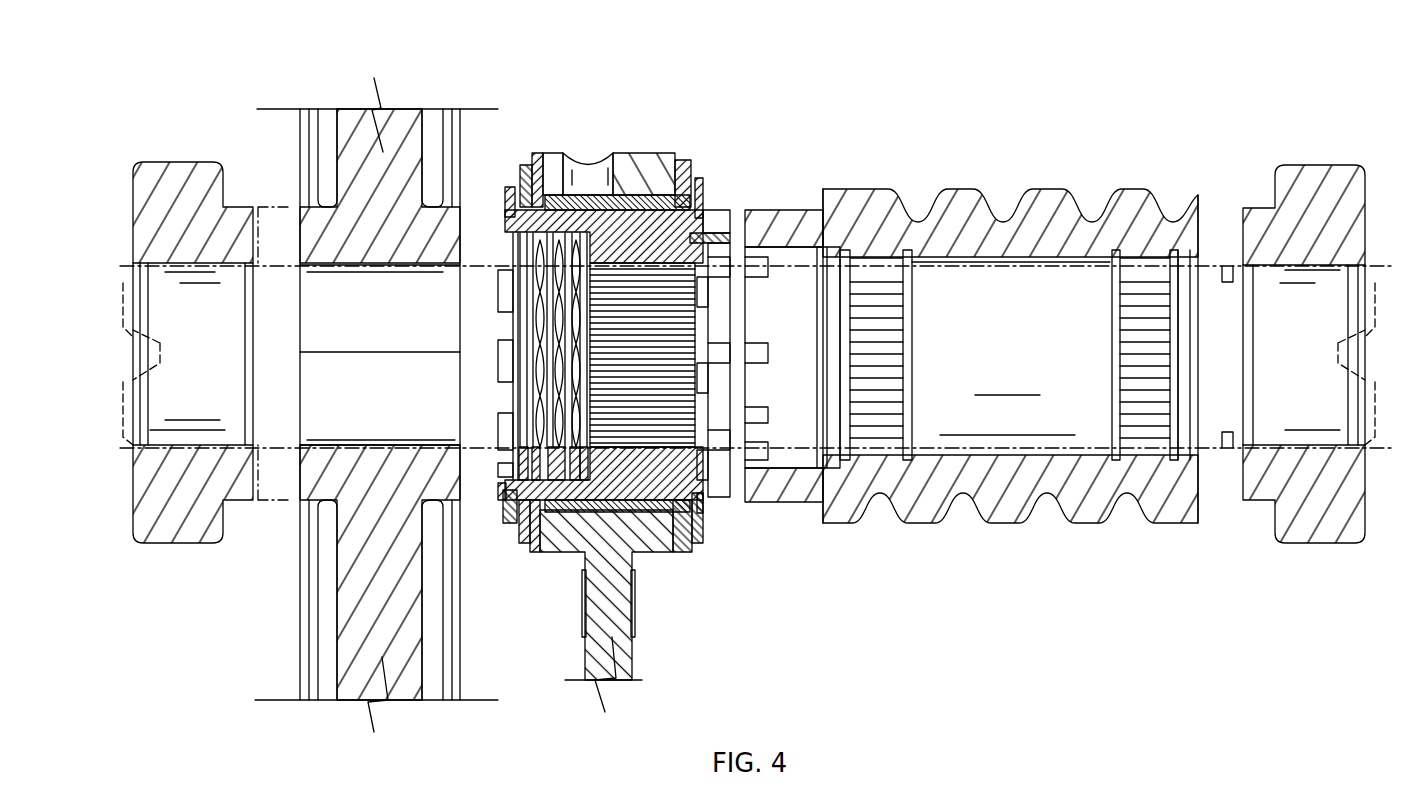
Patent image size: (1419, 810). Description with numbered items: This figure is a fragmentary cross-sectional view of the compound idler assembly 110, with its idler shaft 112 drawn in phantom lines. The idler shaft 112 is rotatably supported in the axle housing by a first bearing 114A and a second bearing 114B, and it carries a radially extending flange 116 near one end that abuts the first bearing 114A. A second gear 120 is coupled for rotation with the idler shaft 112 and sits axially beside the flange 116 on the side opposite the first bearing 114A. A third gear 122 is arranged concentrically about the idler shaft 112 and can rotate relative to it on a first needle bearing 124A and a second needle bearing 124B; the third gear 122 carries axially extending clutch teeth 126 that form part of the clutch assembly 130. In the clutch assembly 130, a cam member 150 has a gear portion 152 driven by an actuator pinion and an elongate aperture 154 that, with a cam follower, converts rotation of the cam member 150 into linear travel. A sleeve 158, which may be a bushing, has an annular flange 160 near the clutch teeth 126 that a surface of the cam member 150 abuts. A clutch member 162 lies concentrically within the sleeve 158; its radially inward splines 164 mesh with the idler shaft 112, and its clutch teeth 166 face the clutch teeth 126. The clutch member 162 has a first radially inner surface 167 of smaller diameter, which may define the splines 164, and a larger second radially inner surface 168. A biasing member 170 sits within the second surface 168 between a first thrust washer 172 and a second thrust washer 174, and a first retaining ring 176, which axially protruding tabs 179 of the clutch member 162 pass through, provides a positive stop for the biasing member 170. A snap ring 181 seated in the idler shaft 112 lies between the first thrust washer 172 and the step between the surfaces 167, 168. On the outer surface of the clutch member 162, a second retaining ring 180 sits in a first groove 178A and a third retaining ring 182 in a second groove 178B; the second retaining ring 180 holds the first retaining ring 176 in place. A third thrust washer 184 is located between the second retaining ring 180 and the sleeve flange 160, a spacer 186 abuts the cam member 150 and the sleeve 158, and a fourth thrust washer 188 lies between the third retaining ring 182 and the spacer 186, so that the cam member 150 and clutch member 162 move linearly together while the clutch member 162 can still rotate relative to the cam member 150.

The compound idler assembly 110 is at (1151, 56).
The idler shaft 112 is at (1218, 264).
The first bearing 114A is at (152, 202).
The second bearing 114B is at (1333, 200).
The flange 116 is at (272, 503).
The second gear 120 is at (358, 138).
The third gear 122 is at (1045, 205).
The first needle bearing 124A is at (877, 288).
The second needle bearing 124B is at (1142, 300).
The clutch teeth 126 is at (777, 235).
The clutch assembly 130 is at (578, 100).
The cam member 150 is at (548, 155).
The gear portion 152 is at (398, 688).
The elongate aperture 154 is at (596, 160).
The sleeve 158 is at (633, 513).
The annular flange 160 is at (683, 548).
The clutch member 162 is at (651, 162).
The splines 164 is at (681, 160).
The clutch teeth 166 is at (720, 293).
The first radially inner surface 167 is at (670, 443).
The second radially inner surface 168 is at (523, 472).
The biasing member 170 is at (526, 272).
The first thrust washer 172 is at (585, 403).
The second thrust washer 174 is at (503, 183).
The first retaining ring 176 is at (518, 292).
The first groove 178A is at (717, 160).
The second groove 178B is at (433, 421).
The axially protruding tabs 179 is at (502, 353).
The second retaining ring 180 is at (703, 507).
The snap ring 181 is at (590, 428).
The third retaining ring 182 is at (507, 522).
The third thrust washer 184 is at (692, 530).
The spacer 186 is at (533, 553).
The fourth thrust washer 188 is at (522, 540).